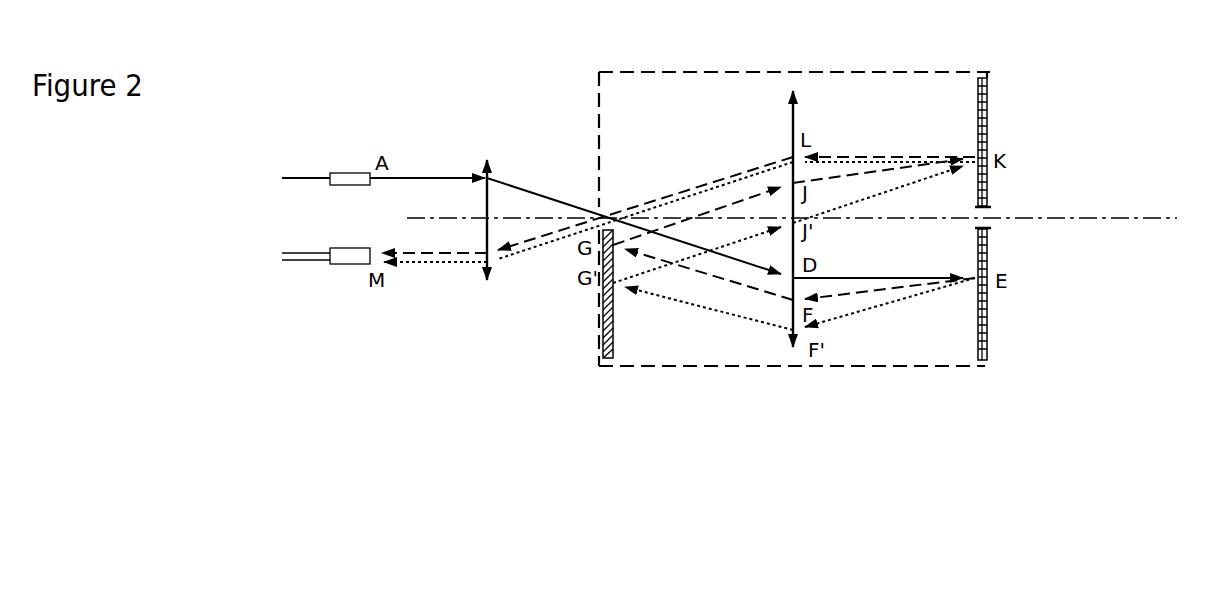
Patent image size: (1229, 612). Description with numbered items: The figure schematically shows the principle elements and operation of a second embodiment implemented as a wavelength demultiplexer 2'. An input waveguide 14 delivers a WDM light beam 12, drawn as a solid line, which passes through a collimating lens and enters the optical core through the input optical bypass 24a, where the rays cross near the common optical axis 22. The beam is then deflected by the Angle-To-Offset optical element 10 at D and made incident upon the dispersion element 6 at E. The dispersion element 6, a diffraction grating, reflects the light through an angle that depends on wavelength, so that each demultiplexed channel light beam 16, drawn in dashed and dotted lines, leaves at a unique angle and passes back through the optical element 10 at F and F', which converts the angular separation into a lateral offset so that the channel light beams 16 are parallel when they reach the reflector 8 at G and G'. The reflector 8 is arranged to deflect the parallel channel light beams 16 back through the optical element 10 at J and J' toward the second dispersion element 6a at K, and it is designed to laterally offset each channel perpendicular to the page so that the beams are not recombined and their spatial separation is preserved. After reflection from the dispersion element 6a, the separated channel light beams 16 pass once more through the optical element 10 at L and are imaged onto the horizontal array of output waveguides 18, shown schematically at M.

The wavelength demultiplexer 2' is at (856, 199).
The dispersion element 6 is at (987, 323).
The dispersion element 6a is at (987, 130).
The reflector 8 is at (603, 347).
The optical element 10 is at (793, 115).
The WDM light beam 12 is at (451, 178).
The input waveguide 14 is at (303, 178).
The channel light beams 16 is at (852, 295).
The output waveguides 18 is at (298, 263).
The optical axis 22 is at (1068, 218).
The optical bypass 24a is at (603, 206).